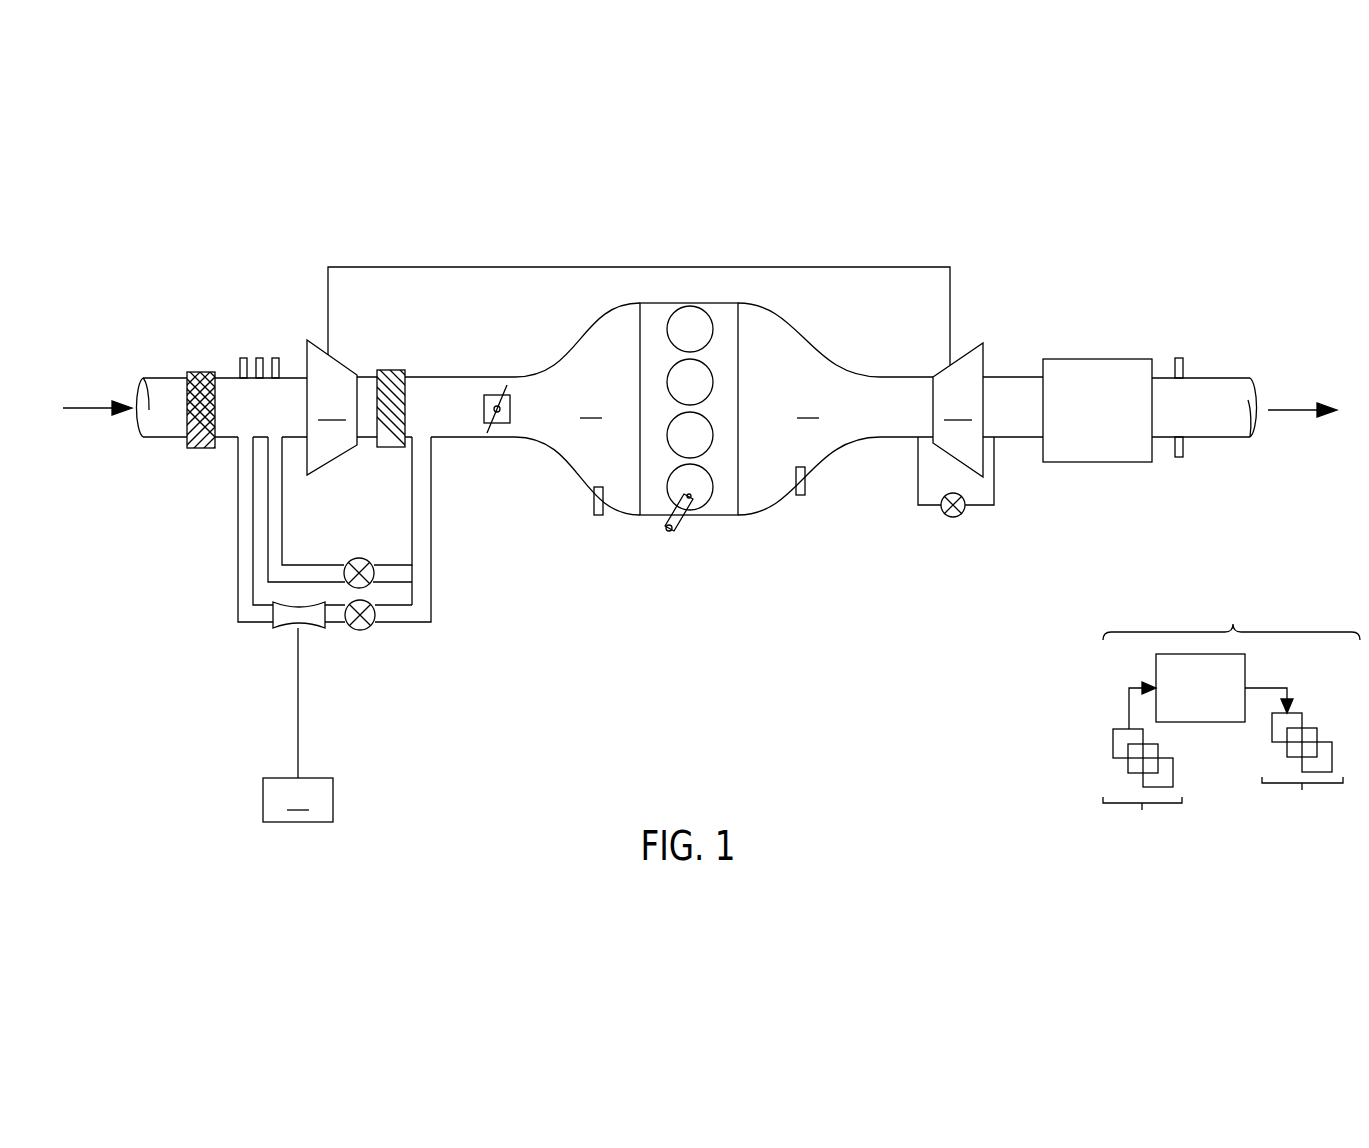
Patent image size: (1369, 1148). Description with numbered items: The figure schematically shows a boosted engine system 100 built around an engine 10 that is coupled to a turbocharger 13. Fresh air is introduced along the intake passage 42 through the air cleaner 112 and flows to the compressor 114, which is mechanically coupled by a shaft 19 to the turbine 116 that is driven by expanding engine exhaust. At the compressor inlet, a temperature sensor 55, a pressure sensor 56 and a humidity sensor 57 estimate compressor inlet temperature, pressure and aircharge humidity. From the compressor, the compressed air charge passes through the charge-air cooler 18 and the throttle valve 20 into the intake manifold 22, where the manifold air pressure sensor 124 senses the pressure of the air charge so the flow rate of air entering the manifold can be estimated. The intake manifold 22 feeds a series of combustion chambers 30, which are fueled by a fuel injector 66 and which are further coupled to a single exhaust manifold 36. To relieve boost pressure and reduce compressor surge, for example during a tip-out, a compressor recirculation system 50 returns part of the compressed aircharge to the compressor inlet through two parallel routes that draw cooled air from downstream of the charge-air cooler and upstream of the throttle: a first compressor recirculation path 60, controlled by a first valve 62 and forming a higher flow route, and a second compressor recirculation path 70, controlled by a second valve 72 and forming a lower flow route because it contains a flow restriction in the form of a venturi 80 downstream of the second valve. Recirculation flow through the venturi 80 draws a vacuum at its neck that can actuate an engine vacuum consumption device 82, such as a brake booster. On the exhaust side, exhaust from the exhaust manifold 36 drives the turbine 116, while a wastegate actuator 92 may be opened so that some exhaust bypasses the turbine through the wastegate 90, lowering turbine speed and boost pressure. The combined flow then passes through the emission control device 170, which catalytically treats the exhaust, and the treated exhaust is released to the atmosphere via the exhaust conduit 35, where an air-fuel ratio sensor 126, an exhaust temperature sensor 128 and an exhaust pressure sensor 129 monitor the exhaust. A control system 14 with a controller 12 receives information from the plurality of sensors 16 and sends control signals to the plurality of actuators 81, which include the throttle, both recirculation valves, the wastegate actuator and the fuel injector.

The engine system 100 is at (1277, 102).
The engine 10 is at (738, 390).
The controller 12 is at (1200, 688).
The turbocharger 13 is at (376, 306).
The control system 14 is at (1231, 715).
The sensors 16 is at (1142, 767).
The charge-air cooler 18 is at (385, 370).
The shaft 19 is at (850, 268).
The throttle valve 20 is at (510, 414).
The intake manifold 22 is at (577, 409).
The combustion chambers 30 is at (712, 322).
The exhaust conduit 35 is at (1230, 378).
The exhaust manifold 36 is at (835, 409).
The intake passage 42 is at (170, 438).
The compressor recirculation system 50 is at (397, 687).
The temperature sensor 55 is at (243, 358).
The pressure sensor 56 is at (259, 358).
The humidity sensor 57 is at (275, 358).
The first compressor recirculation path 60 is at (296, 563).
The first valve 62 is at (362, 558).
The fuel injector 66 is at (685, 518).
The second compressor recirculation path 70 is at (237, 575).
The second valve 72 is at (364, 630).
The venturi 80 is at (286, 629).
The actuators 81 is at (1297, 761).
The vacuum consumption device 82 is at (298, 725).
The wastegate 90 is at (918, 485).
The wastegate actuator 92 is at (947, 516).
The air cleaner 112 is at (202, 372).
The compressor 114 is at (332, 407).
The turbine 116 is at (958, 410).
The manifold air pressure sensor 124 is at (594, 493).
The air-fuel ratio sensor 126 is at (805, 472).
The exhaust temperature sensor 128 is at (1180, 457).
The exhaust pressure sensor 129 is at (1182, 358).
The emission control device 170 is at (1085, 359).